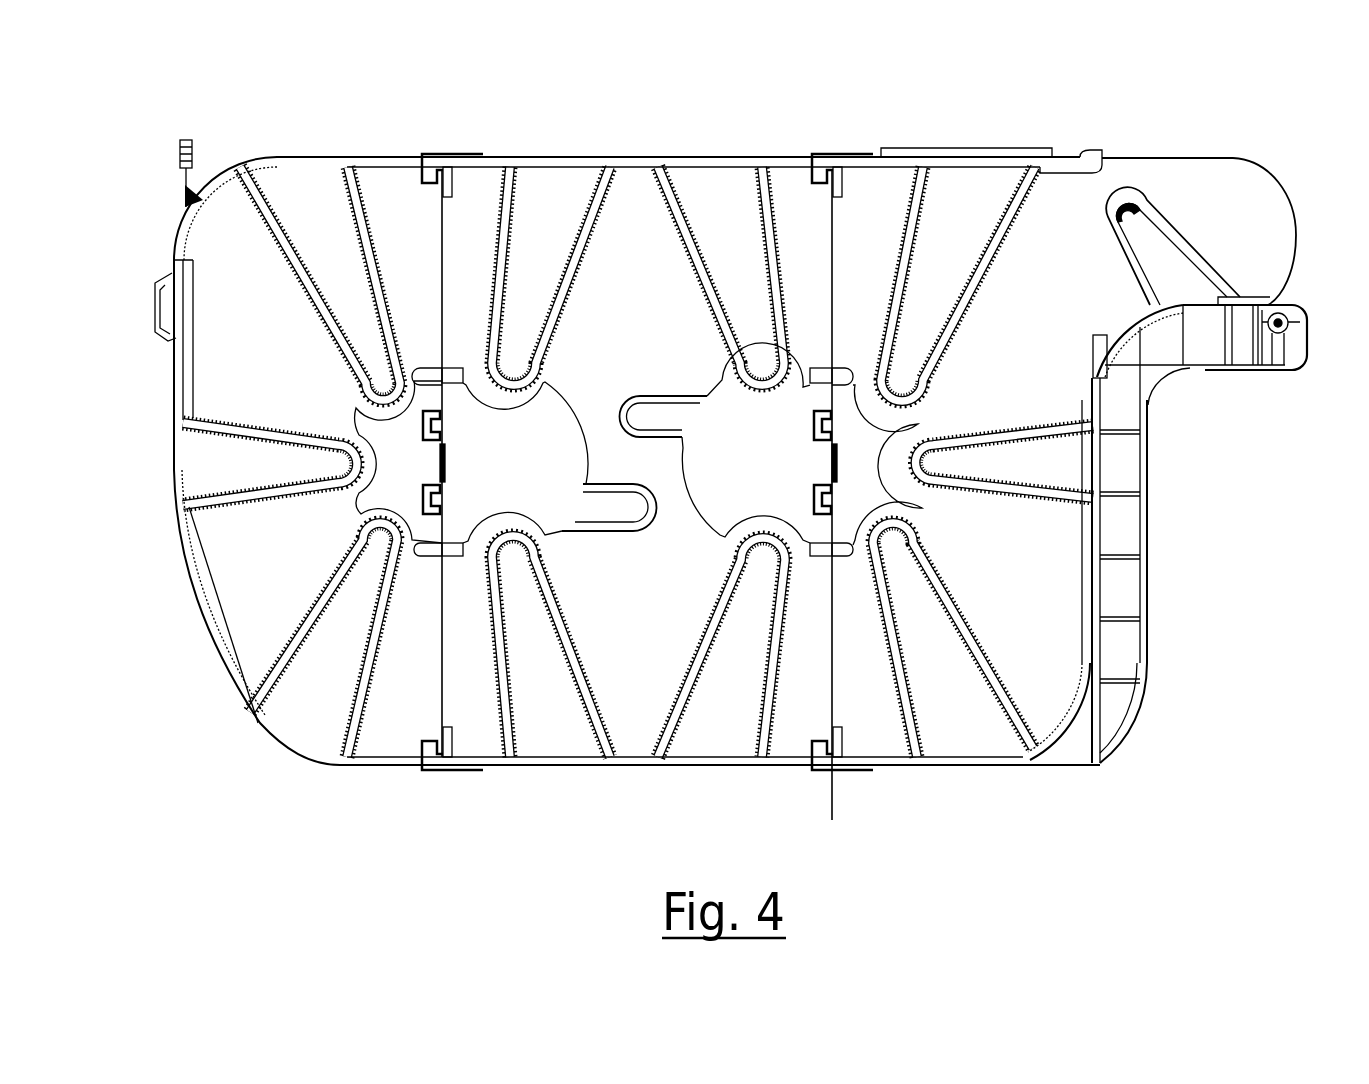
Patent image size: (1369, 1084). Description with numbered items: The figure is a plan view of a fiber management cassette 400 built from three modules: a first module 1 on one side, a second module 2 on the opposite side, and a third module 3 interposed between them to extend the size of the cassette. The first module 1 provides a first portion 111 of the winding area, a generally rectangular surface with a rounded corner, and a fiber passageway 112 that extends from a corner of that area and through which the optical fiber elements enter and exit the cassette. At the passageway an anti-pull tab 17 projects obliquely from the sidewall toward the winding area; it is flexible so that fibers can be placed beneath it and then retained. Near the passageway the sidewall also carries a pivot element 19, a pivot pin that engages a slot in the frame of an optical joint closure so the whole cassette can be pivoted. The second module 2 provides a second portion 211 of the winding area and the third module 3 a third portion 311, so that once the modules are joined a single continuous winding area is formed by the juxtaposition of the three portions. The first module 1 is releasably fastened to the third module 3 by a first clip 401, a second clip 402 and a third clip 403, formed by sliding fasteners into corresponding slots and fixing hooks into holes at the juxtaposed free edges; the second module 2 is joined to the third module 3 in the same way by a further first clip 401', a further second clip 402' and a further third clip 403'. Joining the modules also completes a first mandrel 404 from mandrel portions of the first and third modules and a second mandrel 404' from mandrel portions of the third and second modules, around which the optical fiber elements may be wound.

The fiber management cassette 400 is at (120, 143).
The first module 1 is at (1143, 135).
The second module 2 is at (330, 143).
The third module 3 is at (682, 143).
The anti-pull tab 17 is at (1170, 248).
The pivot element 19 is at (1297, 340).
The first portion of the winding area 111 is at (1023, 367).
The fiber passageway 112 is at (1268, 244).
The second portion of the winding area 211 is at (278, 346).
The third portion of the winding area 311 is at (650, 346).
The first clip 401 is at (848, 127).
The further first clip 401' is at (456, 127).
The second clip 402 is at (783, 462).
The further second clip 402' is at (481, 462).
The third clip 403 is at (861, 790).
The further third clip 403' is at (483, 793).
The first mandrel 404 is at (689, 452).
The second mandrel 404' is at (584, 504).